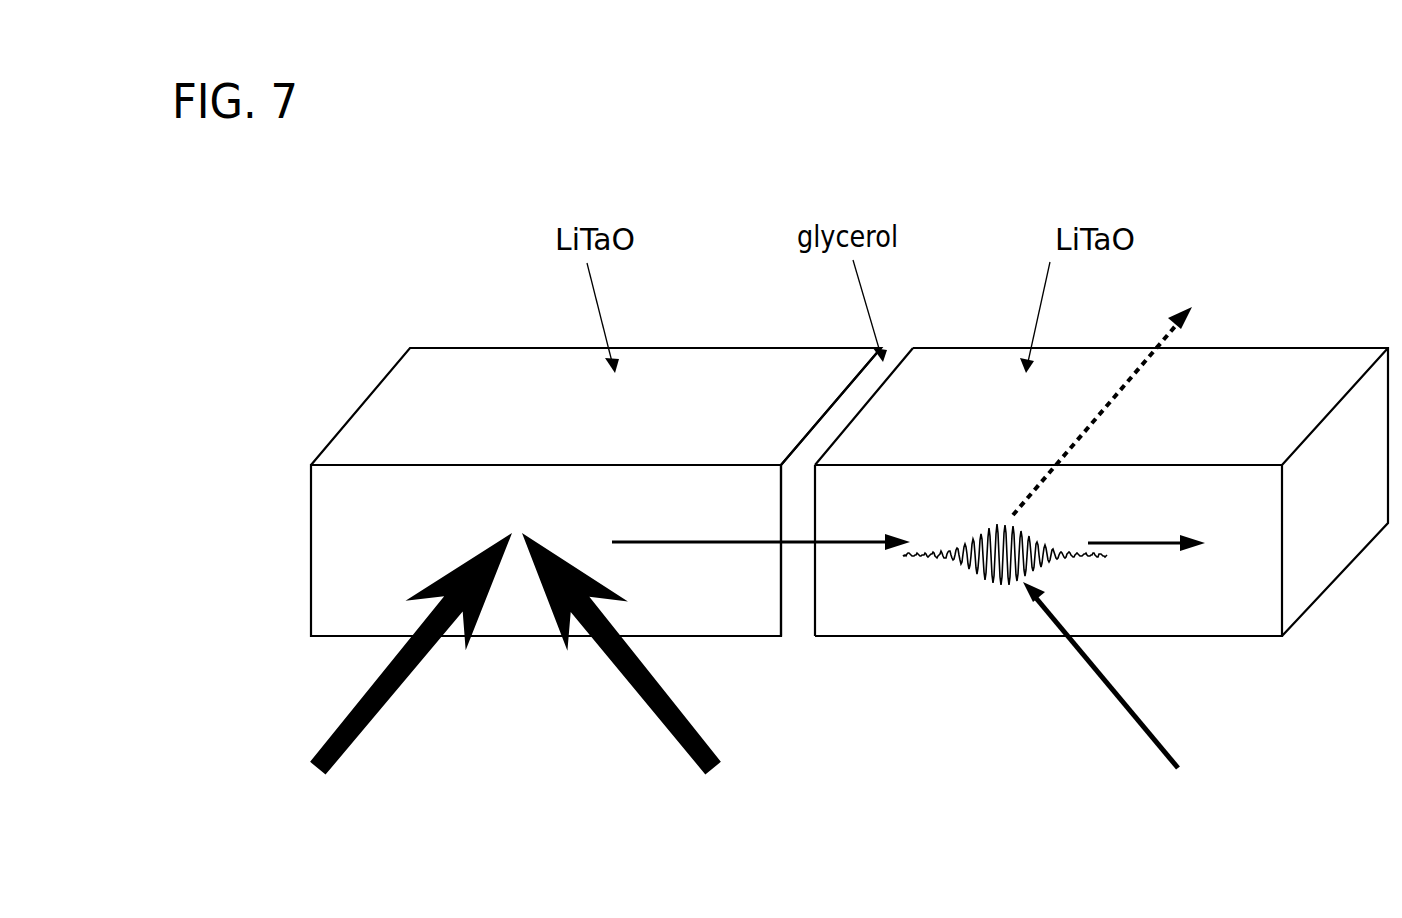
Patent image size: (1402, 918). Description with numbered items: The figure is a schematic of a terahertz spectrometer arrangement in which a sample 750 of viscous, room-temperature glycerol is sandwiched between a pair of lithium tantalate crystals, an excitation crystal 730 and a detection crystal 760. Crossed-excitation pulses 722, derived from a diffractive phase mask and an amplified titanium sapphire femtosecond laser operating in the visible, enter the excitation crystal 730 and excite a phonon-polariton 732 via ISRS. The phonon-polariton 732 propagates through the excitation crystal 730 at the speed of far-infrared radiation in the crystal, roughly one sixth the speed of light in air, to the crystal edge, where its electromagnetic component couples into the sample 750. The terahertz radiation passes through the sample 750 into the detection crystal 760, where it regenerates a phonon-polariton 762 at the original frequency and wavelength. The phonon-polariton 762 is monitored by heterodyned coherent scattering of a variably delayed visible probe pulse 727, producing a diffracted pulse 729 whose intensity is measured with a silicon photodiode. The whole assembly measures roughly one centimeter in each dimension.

The crossed-excitation pulses 722 is at (428, 653).
The probe pulse 727 is at (1133, 720).
The diffracted pulse 729 is at (1197, 303).
The excitation crystal 730 is at (483, 407).
The phonon-polariton 732 is at (688, 548).
The sample 750 is at (798, 631).
The detection crystal 760 is at (1275, 413).
The phonon-polariton 762 is at (968, 575).